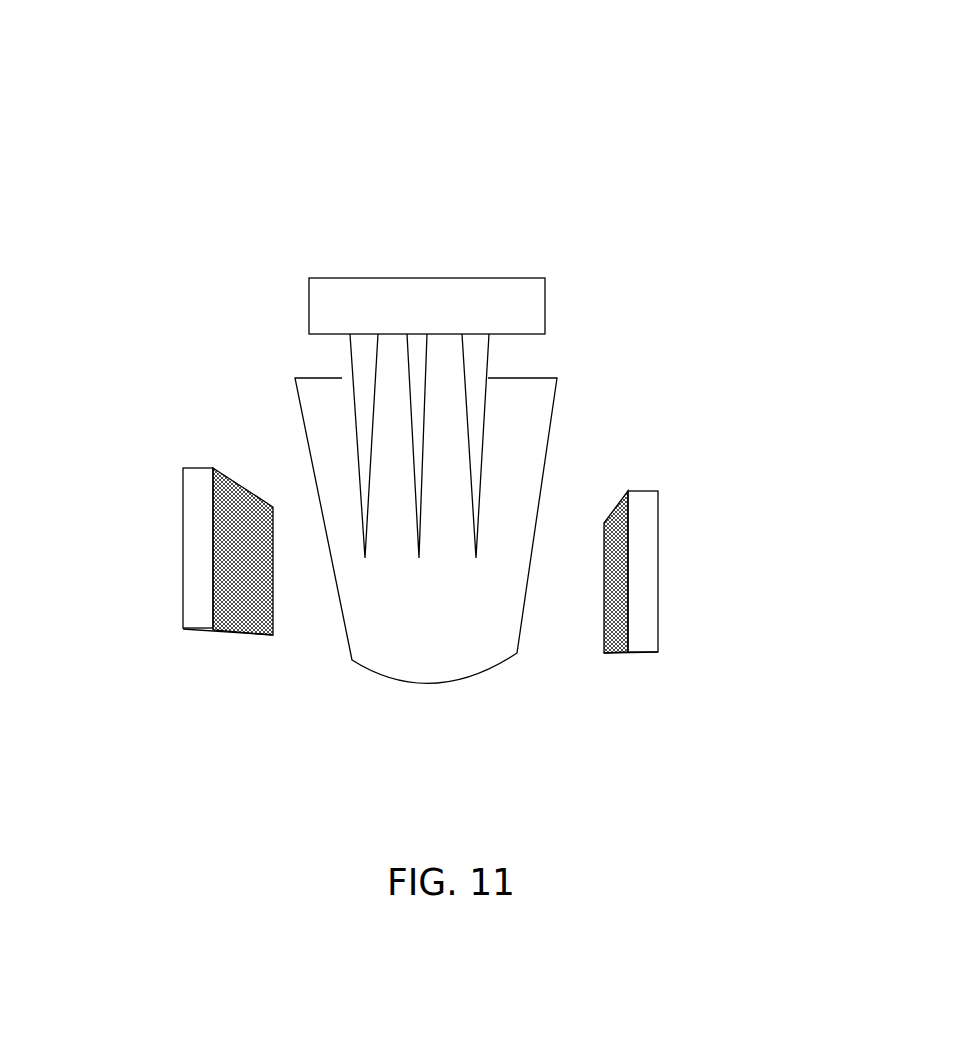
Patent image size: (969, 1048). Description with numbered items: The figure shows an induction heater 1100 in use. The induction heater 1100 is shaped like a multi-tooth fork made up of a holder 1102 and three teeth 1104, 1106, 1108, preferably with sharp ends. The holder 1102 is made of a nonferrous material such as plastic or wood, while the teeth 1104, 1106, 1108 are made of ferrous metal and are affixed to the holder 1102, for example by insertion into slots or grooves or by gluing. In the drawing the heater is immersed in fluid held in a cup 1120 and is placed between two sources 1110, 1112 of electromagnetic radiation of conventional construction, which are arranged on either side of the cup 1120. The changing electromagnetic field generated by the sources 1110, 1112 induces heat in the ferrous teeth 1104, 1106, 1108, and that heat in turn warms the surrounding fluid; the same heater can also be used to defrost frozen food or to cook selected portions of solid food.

The system 1100 is at (406, 183).
The holder 1102 is at (427, 278).
The tooth 1104 is at (350, 407).
The tooth 1106 is at (423, 490).
The tooth 1108 is at (488, 435).
The source of electromagnetic radiation 1110 is at (183, 548).
The source of electromagnetic radiation 1112 is at (658, 570).
The cup 1120 is at (433, 655).